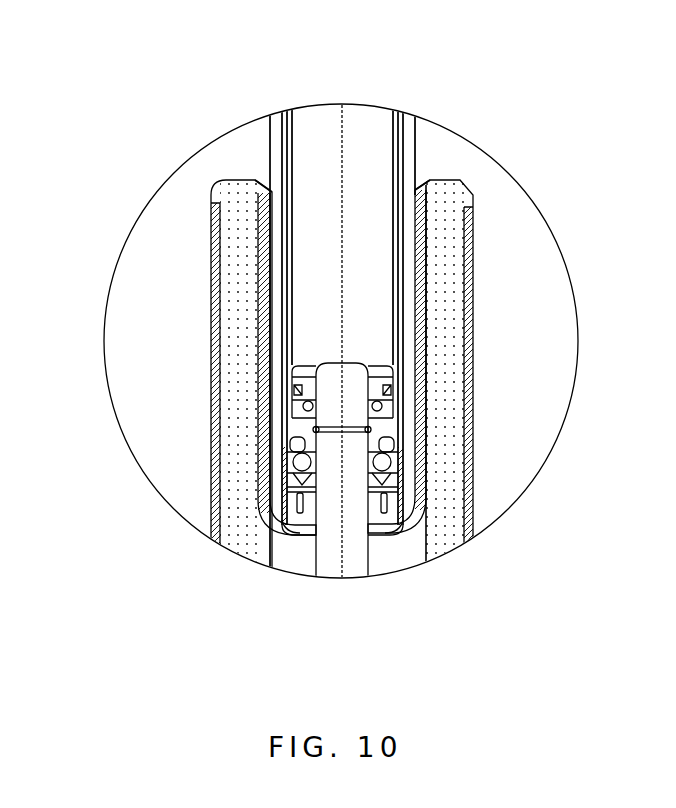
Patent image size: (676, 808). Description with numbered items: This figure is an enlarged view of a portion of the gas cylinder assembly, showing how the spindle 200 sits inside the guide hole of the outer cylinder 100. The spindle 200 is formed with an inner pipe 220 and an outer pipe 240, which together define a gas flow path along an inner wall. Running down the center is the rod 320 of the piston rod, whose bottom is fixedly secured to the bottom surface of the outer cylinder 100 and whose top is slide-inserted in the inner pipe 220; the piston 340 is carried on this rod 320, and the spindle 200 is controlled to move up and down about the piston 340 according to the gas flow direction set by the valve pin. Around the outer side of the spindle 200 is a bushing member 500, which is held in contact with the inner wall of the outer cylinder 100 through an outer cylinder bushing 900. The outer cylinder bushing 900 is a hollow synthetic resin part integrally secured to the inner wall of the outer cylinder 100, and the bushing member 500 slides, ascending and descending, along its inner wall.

The outer cylinder 100 is at (213, 343).
The spindle 200 is at (126, 64).
The inner pipe 220 is at (290, 122).
The outer pipe 240 is at (274, 142).
The rod 320 is at (318, 551).
The piston 340 is at (368, 358).
The bushing member 500 is at (272, 440).
The outer cylinder bushing 900 is at (240, 268).